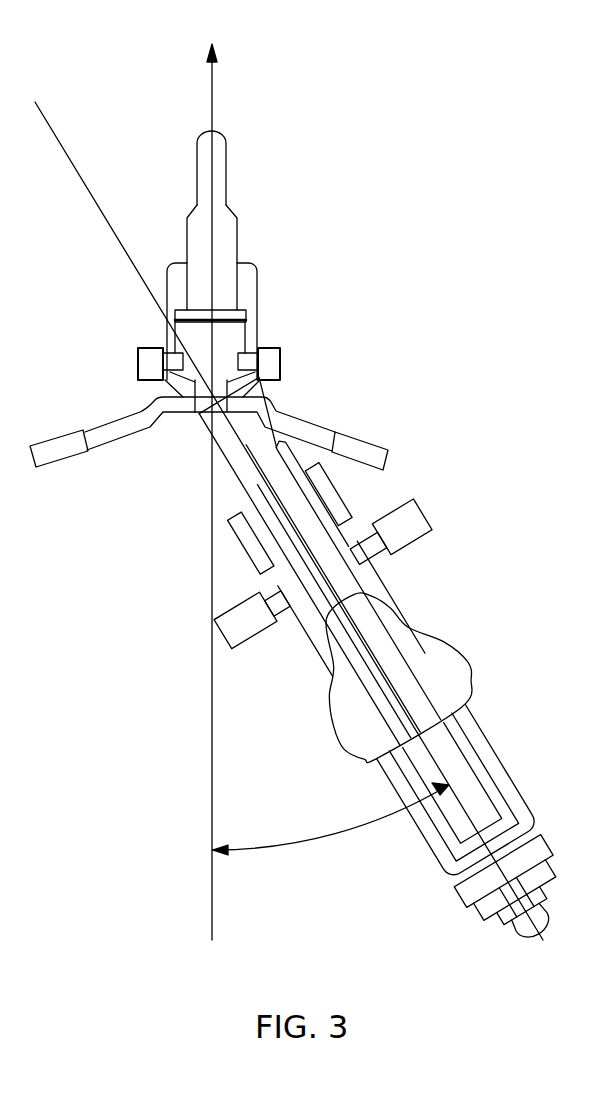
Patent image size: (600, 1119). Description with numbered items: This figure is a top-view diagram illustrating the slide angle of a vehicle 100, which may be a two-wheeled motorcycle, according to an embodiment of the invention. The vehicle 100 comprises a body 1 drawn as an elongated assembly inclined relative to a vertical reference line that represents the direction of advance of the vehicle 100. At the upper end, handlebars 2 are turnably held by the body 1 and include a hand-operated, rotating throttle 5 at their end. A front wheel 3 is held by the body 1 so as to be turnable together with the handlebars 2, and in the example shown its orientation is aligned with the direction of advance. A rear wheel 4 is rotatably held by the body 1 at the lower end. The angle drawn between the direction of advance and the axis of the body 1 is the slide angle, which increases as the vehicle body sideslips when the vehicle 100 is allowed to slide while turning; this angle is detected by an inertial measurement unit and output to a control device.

The vehicle 100 is at (460, 60).
The body 1 is at (438, 832).
The handlebars 2 is at (305, 423).
The front wheel 3 is at (226, 170).
The rear wheel 4 is at (527, 977).
The throttle 5 is at (383, 450).